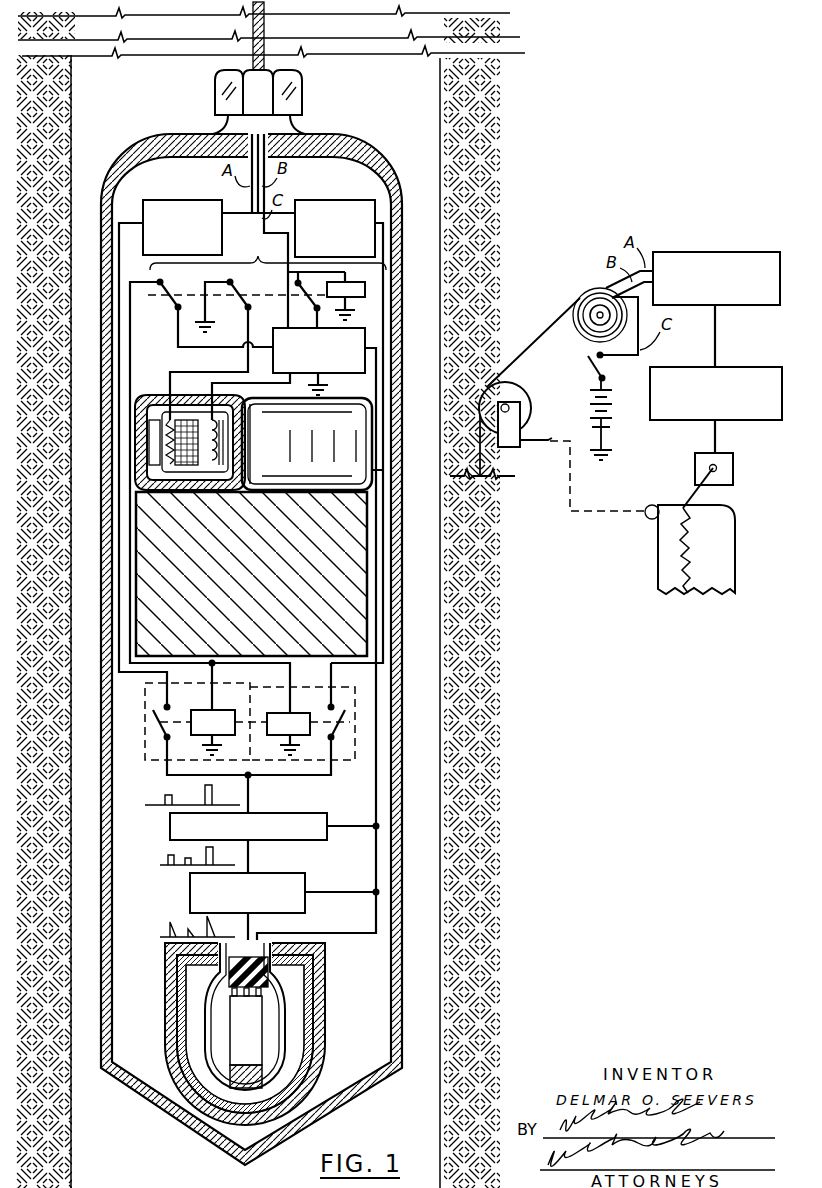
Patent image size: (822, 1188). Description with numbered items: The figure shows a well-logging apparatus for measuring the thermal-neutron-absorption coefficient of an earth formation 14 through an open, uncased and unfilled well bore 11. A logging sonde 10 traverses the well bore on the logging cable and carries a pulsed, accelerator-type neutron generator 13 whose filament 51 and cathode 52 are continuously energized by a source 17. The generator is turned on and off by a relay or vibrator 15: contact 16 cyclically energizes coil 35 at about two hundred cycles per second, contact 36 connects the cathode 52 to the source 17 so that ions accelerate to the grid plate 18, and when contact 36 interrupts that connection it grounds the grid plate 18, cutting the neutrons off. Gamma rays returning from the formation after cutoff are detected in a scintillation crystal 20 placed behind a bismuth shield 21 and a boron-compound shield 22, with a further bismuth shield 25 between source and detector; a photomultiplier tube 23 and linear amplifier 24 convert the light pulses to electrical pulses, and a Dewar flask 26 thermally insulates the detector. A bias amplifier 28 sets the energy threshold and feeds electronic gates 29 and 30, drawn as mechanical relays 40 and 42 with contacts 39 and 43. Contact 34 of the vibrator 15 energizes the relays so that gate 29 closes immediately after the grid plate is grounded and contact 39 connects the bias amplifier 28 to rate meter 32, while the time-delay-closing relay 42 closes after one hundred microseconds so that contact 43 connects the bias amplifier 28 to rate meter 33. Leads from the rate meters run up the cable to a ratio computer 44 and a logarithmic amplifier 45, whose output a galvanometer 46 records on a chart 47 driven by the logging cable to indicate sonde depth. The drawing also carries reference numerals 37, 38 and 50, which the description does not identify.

The logging sonde 10 is at (403, 612).
The well bore 11 is at (434, 678).
The neutron generator 13 is at (376, 470).
The earth formation 14 is at (470, 786).
The relay or vibrator 15 is at (268, 254).
The contact 16 is at (311, 296).
The source 17 is at (337, 374).
The grid plate 18 is at (147, 400).
The scintillation crystal 20 is at (262, 1080).
The shield 21 is at (313, 1040).
The shield 22 is at (325, 1016).
The photomultiplier tube 23 is at (212, 1056).
The linear amplifier 24 is at (190, 896).
The shield 25 is at (370, 567).
The Dewar flask 26 is at (205, 1002).
The bias amplifier 28 is at (170, 828).
The electronic gate 29 is at (324, 755).
The electronic gate 30 is at (196, 755).
The rate meter 32 is at (332, 200).
The rate meter 33 is at (170, 200).
The contact 34 is at (168, 294).
The coil 35 is at (358, 298).
The contact 36 is at (242, 294).
The housing wall 37 is at (403, 362).
The housing wall 38 is at (112, 362).
The contact 39 is at (340, 715).
The relay 40 is at (277, 713).
The relay 42 is at (218, 710).
The contact 43 is at (160, 714).
The ratio computer 44 is at (736, 252).
The logarithmic amplifier 45 is at (746, 367).
The galvanometer 46 is at (733, 470).
The chart 47 is at (735, 550).
The battery 50 is at (590, 406).
The filament 51 is at (228, 448).
The cathode 52 is at (208, 442).